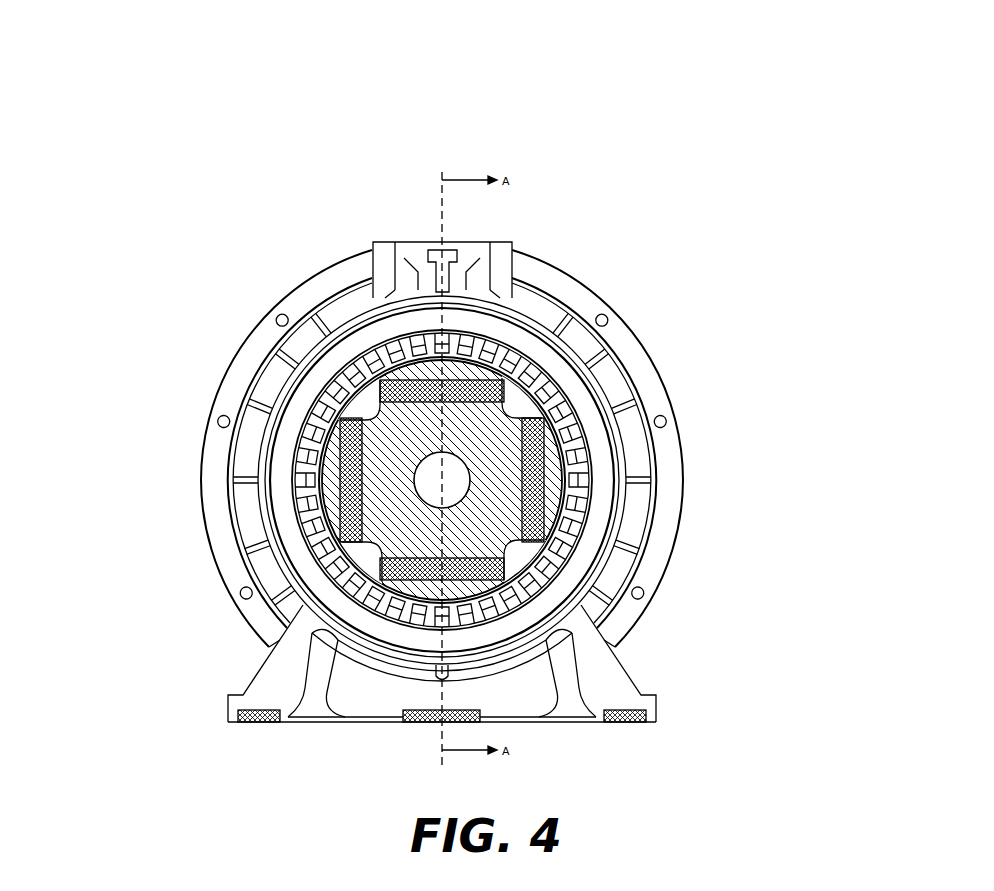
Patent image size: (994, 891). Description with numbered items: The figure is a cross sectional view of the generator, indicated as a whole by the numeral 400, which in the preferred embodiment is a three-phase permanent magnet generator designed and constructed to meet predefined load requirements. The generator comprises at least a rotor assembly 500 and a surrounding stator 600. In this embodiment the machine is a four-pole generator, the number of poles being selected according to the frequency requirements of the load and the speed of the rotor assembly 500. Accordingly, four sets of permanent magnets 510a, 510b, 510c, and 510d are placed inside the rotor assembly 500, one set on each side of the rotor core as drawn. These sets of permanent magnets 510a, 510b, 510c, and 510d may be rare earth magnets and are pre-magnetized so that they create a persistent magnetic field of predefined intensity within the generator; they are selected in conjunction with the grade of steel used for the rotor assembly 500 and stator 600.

The electric motor 400 is at (178, 92).
The rotor assembly 500 is at (517, 398).
The stator 600 is at (587, 437).
The set of permanent magnets 510a is at (345, 495).
The set of permanent magnets 510b is at (402, 390).
The set of permanent magnets 510c is at (540, 500).
The set of permanent magnets 510d is at (480, 577).